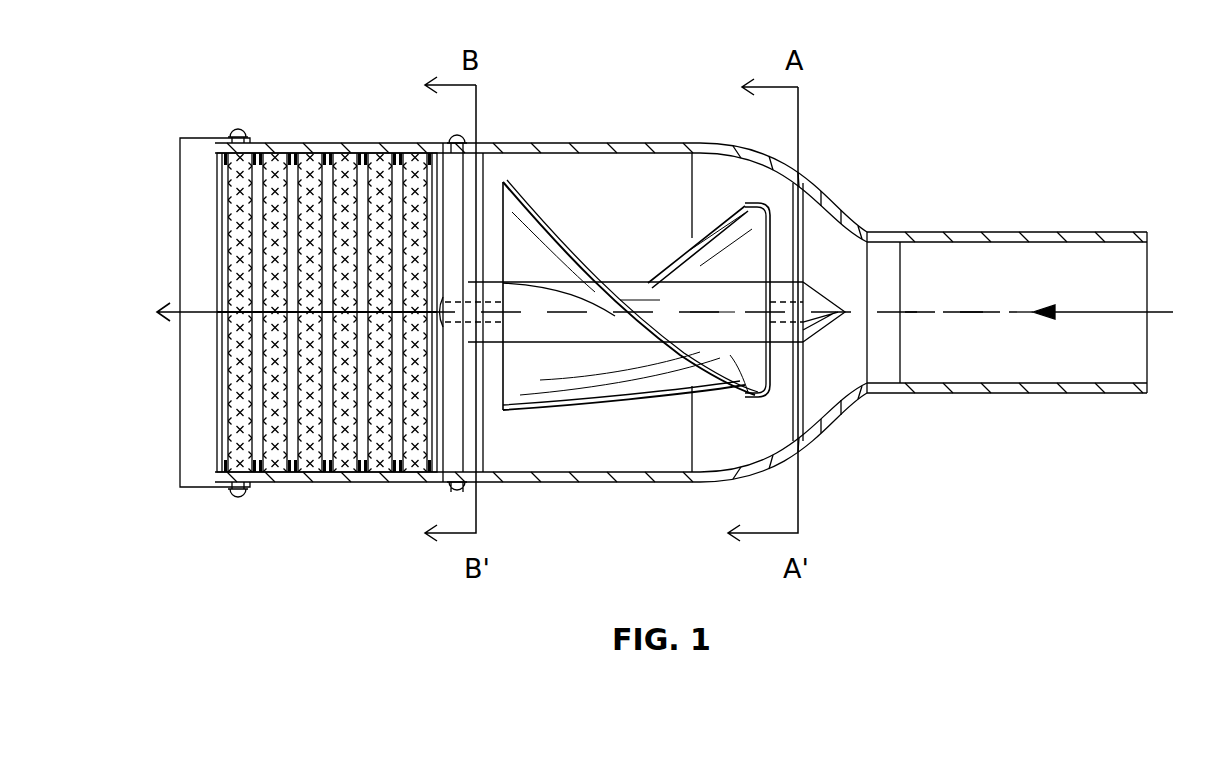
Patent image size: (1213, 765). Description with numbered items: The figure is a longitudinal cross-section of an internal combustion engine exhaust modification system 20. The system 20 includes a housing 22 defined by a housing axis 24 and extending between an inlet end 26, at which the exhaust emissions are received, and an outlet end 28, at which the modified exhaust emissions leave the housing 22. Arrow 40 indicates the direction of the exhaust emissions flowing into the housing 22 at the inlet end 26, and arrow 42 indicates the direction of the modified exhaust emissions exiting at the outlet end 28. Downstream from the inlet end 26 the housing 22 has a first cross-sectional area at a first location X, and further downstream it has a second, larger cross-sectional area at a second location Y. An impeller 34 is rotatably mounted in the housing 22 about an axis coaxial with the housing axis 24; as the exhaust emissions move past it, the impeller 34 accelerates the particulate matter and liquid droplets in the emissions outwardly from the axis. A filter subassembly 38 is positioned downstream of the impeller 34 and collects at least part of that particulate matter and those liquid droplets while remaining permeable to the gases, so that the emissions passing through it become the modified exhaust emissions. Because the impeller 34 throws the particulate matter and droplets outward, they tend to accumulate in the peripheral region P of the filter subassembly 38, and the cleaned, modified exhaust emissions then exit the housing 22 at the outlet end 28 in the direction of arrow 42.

The exhaust modification system 20 is at (878, 178).
The housing 22 is at (829, 427).
The housing axis 24 is at (937, 313).
The inlet end 26 is at (1148, 364).
The outlet end 28 is at (212, 465).
The impeller 34 is at (552, 238).
The filter subassembly 38 is at (346, 468).
The arrow 40 is at (1086, 313).
The arrow 42 is at (205, 308).
The peripheral region P is at (408, 142).
The first location X is at (802, 172).
The second location Y is at (478, 143).